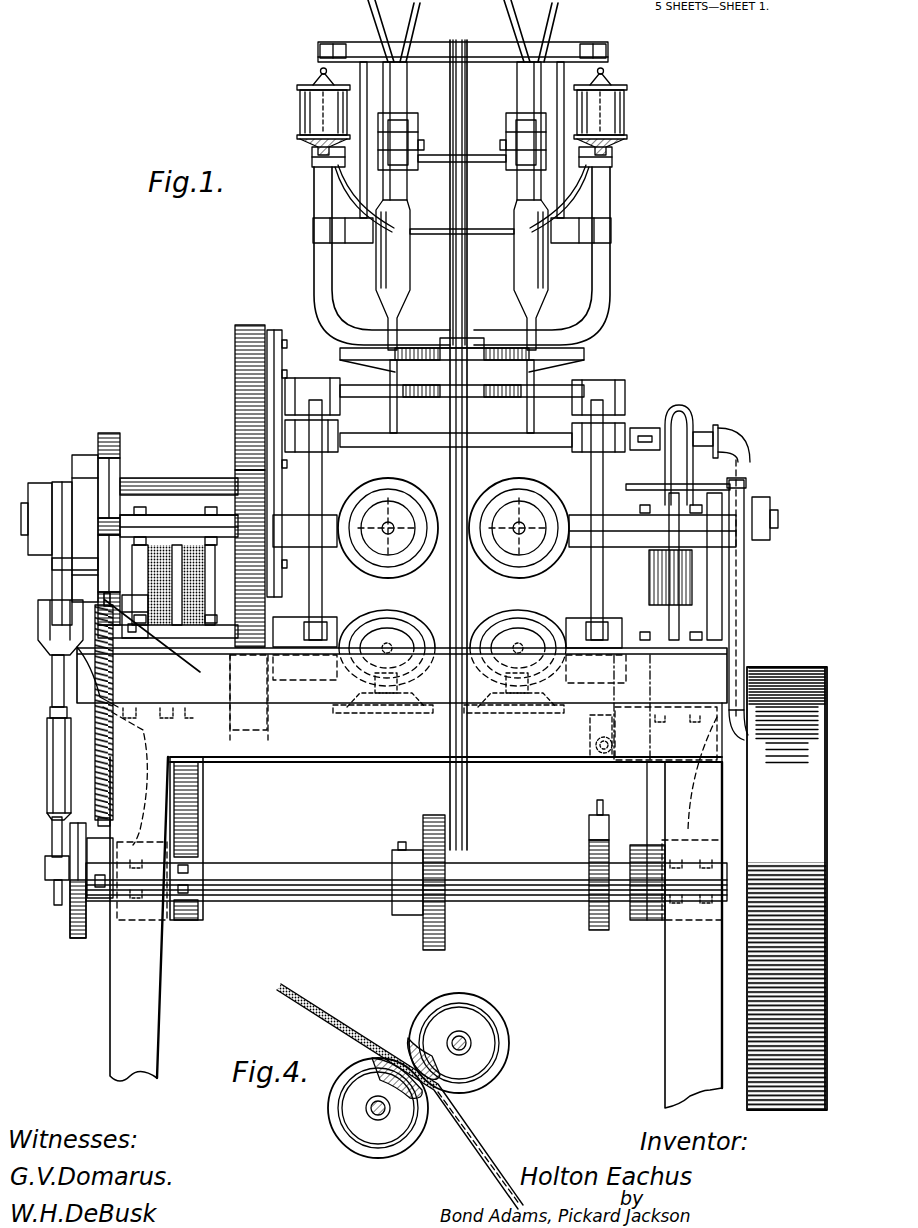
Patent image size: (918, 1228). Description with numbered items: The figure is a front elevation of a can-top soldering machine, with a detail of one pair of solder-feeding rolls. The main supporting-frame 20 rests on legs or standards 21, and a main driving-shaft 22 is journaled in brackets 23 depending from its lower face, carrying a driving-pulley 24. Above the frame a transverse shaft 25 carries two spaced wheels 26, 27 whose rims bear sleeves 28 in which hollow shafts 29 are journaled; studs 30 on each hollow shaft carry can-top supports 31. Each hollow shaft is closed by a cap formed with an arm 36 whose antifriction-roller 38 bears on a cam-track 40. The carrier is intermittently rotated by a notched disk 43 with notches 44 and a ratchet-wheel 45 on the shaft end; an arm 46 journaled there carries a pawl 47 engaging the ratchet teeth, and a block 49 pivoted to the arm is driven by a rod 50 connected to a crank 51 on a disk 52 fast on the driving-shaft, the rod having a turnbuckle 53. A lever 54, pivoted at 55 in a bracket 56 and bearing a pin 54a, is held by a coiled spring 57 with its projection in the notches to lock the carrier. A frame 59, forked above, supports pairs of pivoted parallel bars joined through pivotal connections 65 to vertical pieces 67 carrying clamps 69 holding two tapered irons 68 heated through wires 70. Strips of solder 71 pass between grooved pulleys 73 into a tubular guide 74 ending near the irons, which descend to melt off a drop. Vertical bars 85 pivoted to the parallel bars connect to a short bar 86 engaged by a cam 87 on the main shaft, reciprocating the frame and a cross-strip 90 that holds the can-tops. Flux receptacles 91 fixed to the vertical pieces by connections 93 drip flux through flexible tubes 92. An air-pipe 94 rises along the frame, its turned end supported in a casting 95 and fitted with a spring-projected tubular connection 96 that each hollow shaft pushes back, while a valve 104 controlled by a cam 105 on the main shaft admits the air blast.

In FIG. 1, the main supporting-frame 20 is at (706, 677).
In FIG. 1, the legs or standards 21 is at (150, 1040).
In FIG. 1, the main driving-shaft 22 is at (285, 860).
In FIG. 1, the brackets 23 is at (190, 812).
In FIG. 1, the driving-pulley 24 is at (779, 683).
In FIG. 1, the shaft 25 is at (40, 483).
In FIG. 1, the wheel 26 is at (322, 497).
In FIG. 1, the wheel 27 is at (592, 482).
In FIG. 1, the sleeves 28 is at (305, 378).
In FIG. 1, the hollow shafts 29 is at (447, 397).
In FIG. 1, the studs 30 is at (393, 378).
In FIG. 1, the can-top support 31 is at (350, 548).
In FIG. 1, the arm 36 is at (253, 353).
In FIG. 1, the antifriction-roller 38 is at (268, 340).
In FIG. 1, the cam-track 40 is at (247, 402).
In FIG. 1, the disk 43 is at (113, 443).
In FIG. 1, the notches 44 is at (108, 527).
In FIG. 1, the ratchet-wheel 45 is at (78, 455).
In FIG. 1, the arm 46 is at (40, 505).
In FIG. 1, the pawl 47 is at (80, 565).
In FIG. 1, the block 49 is at (45, 640).
In FIG. 1, the rod 50 is at (52, 680).
In FIG. 1, the crank 51 is at (63, 880).
In FIG. 1, the disk 52 is at (78, 942).
In FIG. 1, the turnbuckle 53 is at (50, 760).
In FIG. 1, the lever 54 is at (200, 672).
In FIG. 1, the pin 54a is at (118, 725).
In FIG. 1, the pivot 55 is at (148, 608).
In FIG. 1, the bracket 56 is at (132, 605).
In FIG. 1, the coiled spring 57 is at (115, 700).
In FIG. 1, the frame 59 is at (318, 277).
In FIG. 1, the pivotal connections 65 is at (504, 235).
In FIG. 1, the vertical pieces 67 is at (360, 78).
In FIG. 1, the irons 68 is at (392, 270).
In FIG. 1, the clamps 69 is at (405, 163).
In FIG. 1, the wires 70 is at (405, 20).
In FIG. 4, the strips of solder 71 is at (343, 1027).
In FIG. 4, the grooved pulleys 73 is at (340, 1115).
In FIG. 4, the tubular guide 74 is at (467, 1133).
In FIG. 1, the vertical bars 85 is at (471, 117).
In FIG. 1, the short bar 86 is at (462, 805).
In FIG. 1, the cam 87 is at (423, 823).
In FIG. 1, the cross-strip 90 is at (462, 345).
In FIG. 1, the receptacles 91 is at (320, 118).
In FIG. 1, the flexible tubes 92 is at (345, 200).
In FIG. 1, the connections 93 is at (320, 162).
In FIG. 1, the air-pipe 94 is at (748, 472).
In FIG. 1, the casting 95 is at (695, 420).
In FIG. 1, the tubular connection 96 is at (648, 426).
In FIG. 1, the valve 104 is at (582, 800).
In FIG. 1, the cam 105 is at (599, 930).